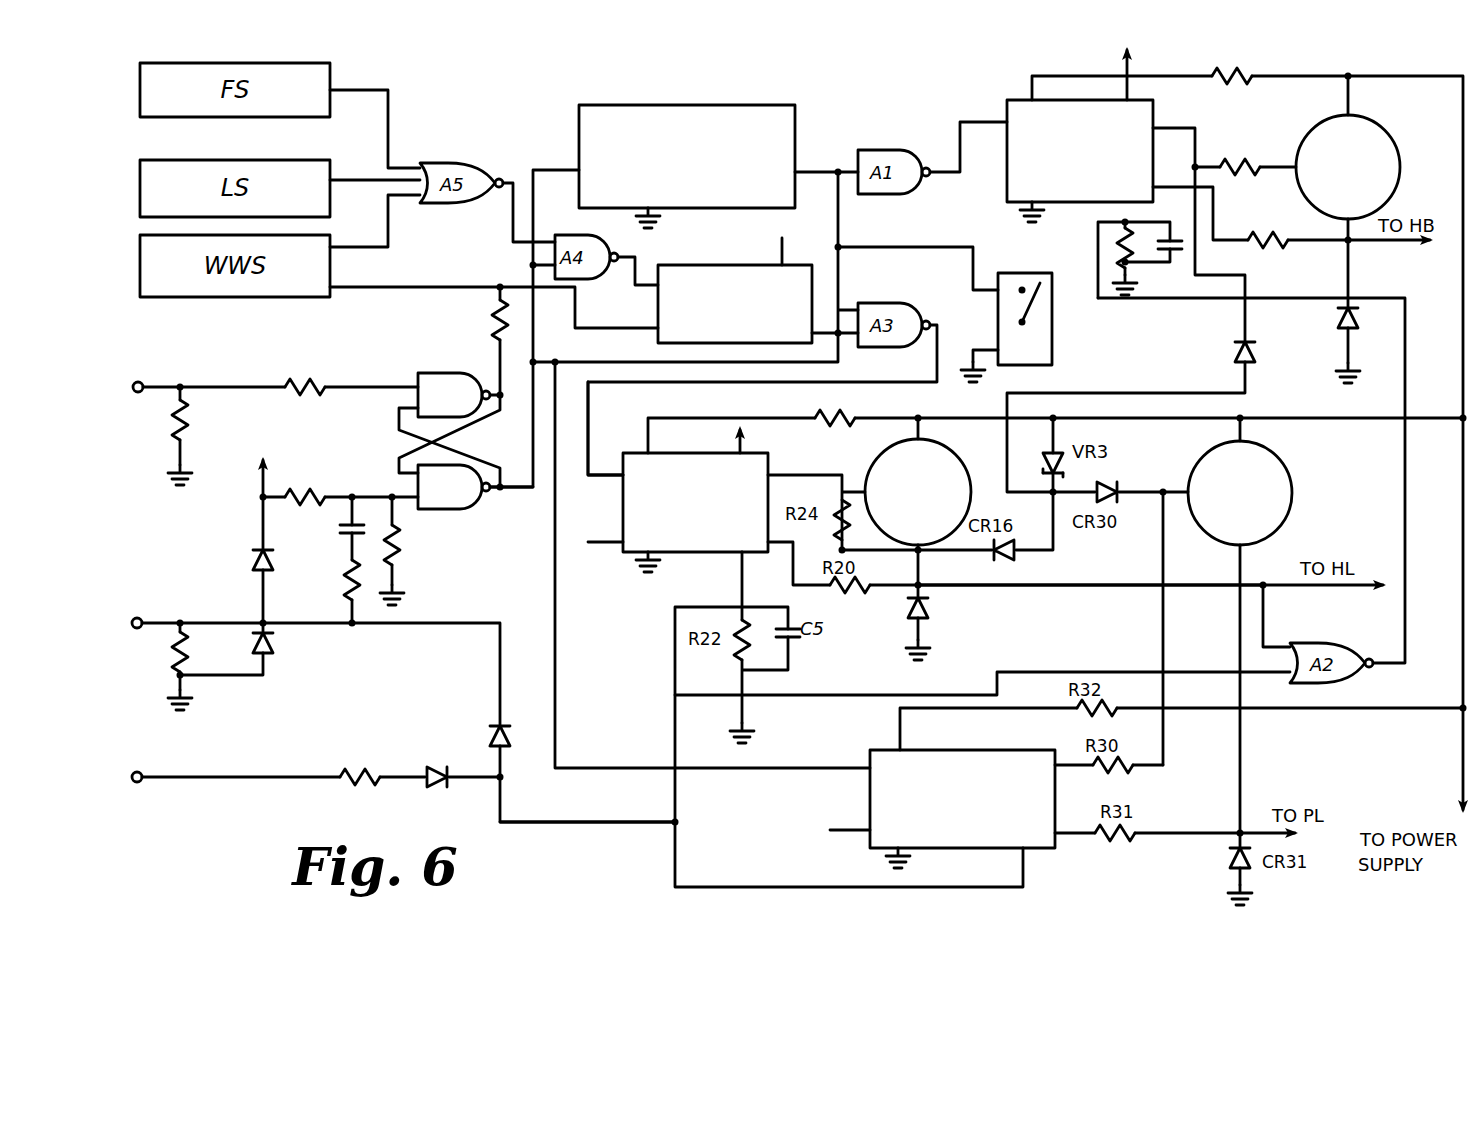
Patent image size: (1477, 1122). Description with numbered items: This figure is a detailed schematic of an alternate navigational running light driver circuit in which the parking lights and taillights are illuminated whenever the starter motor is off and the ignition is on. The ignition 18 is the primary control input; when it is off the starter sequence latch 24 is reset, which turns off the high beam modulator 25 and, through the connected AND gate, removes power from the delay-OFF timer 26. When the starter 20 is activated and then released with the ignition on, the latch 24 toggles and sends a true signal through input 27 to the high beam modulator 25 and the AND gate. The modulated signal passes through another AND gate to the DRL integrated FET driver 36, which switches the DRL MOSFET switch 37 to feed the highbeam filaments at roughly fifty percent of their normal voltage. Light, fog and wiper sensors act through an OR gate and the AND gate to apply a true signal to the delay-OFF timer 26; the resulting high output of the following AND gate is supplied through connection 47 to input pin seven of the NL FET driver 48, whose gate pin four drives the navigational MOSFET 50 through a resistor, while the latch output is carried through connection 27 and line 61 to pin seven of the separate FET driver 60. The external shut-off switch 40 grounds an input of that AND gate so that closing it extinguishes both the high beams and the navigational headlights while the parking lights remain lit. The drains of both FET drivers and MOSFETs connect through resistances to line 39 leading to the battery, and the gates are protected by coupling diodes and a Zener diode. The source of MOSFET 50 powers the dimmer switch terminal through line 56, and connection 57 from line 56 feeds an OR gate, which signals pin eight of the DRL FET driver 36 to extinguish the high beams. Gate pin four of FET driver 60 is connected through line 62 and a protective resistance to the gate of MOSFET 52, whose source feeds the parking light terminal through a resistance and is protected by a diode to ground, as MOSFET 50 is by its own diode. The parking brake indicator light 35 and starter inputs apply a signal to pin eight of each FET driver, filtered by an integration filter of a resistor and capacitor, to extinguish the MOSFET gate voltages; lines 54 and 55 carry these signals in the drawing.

The ignition 18 is at (138, 392).
The starter 20 is at (137, 628).
The starter sequence latch 24 is at (383, 445).
The high beam modulator 25 is at (579, 123).
The delay-OFF timer 26 is at (658, 300).
The input 27 is at (535, 437).
The parking brake indicator light 35 is at (138, 783).
The DRL integrated FET driver 36 is at (1007, 105).
The DRL MOSFET switch 37 is at (1310, 133).
The line to vehicle battery 39 is at (1310, 418).
The external shut-off switch 40 is at (998, 306).
The connection 47 is at (607, 483).
The NL FET driver 48 is at (630, 560).
The navigational MOSFET 50 is at (874, 458).
The navigational MOSFET switch 52 is at (1293, 478).
The feedback line to A2 54 is at (855, 695).
The parking brake signal line 55 is at (617, 818).
The line 56 is at (1130, 583).
The connection 57 is at (1268, 620).
The FET driver 60 is at (857, 846).
The line 61 is at (555, 542).
The line 62 is at (1166, 638).